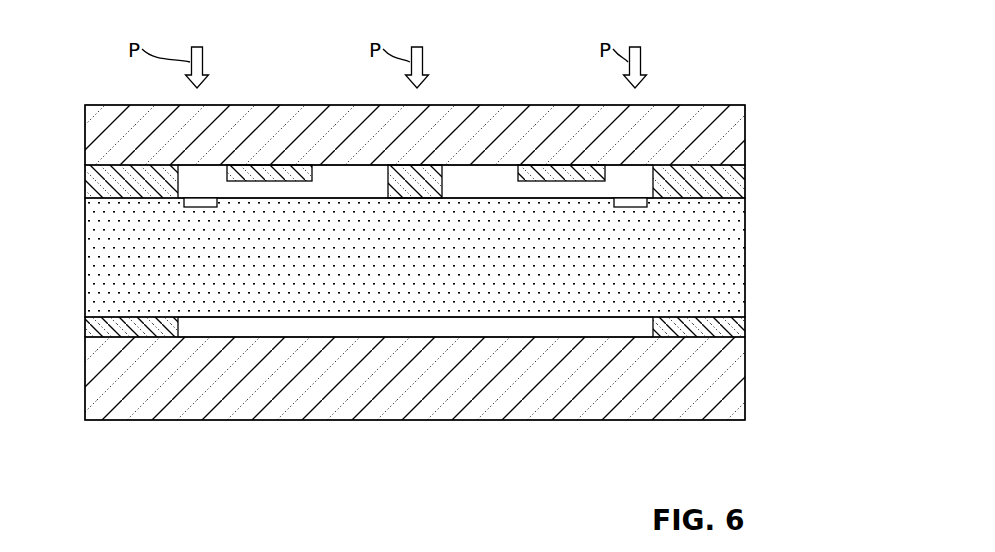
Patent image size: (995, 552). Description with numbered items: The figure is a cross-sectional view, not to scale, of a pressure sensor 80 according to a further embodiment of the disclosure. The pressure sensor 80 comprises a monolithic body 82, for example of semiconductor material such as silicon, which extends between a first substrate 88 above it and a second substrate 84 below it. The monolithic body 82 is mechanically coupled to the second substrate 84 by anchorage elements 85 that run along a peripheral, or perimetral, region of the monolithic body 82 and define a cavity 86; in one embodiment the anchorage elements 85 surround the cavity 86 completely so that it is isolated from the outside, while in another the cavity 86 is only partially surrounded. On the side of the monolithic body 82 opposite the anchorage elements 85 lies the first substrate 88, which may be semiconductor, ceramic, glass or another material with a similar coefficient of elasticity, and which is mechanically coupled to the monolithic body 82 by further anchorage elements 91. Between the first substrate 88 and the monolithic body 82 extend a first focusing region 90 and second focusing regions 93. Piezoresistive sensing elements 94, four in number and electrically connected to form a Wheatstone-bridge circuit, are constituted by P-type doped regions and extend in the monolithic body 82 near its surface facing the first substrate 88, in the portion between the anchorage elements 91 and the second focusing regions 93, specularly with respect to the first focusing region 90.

The pressure sensor 80 is at (93, 86).
The monolithic body 82 is at (92, 253).
The second substrate 84 is at (93, 363).
The anchorage elements 85 is at (92, 327).
The cavity 86 is at (430, 336).
The first substrate 88 is at (100, 134).
The first focusing region 90 is at (425, 175).
The anchorage elements 91 is at (97, 182).
The second focusing regions 93 is at (277, 165).
The piezoresistive sensing elements 94 is at (193, 206).